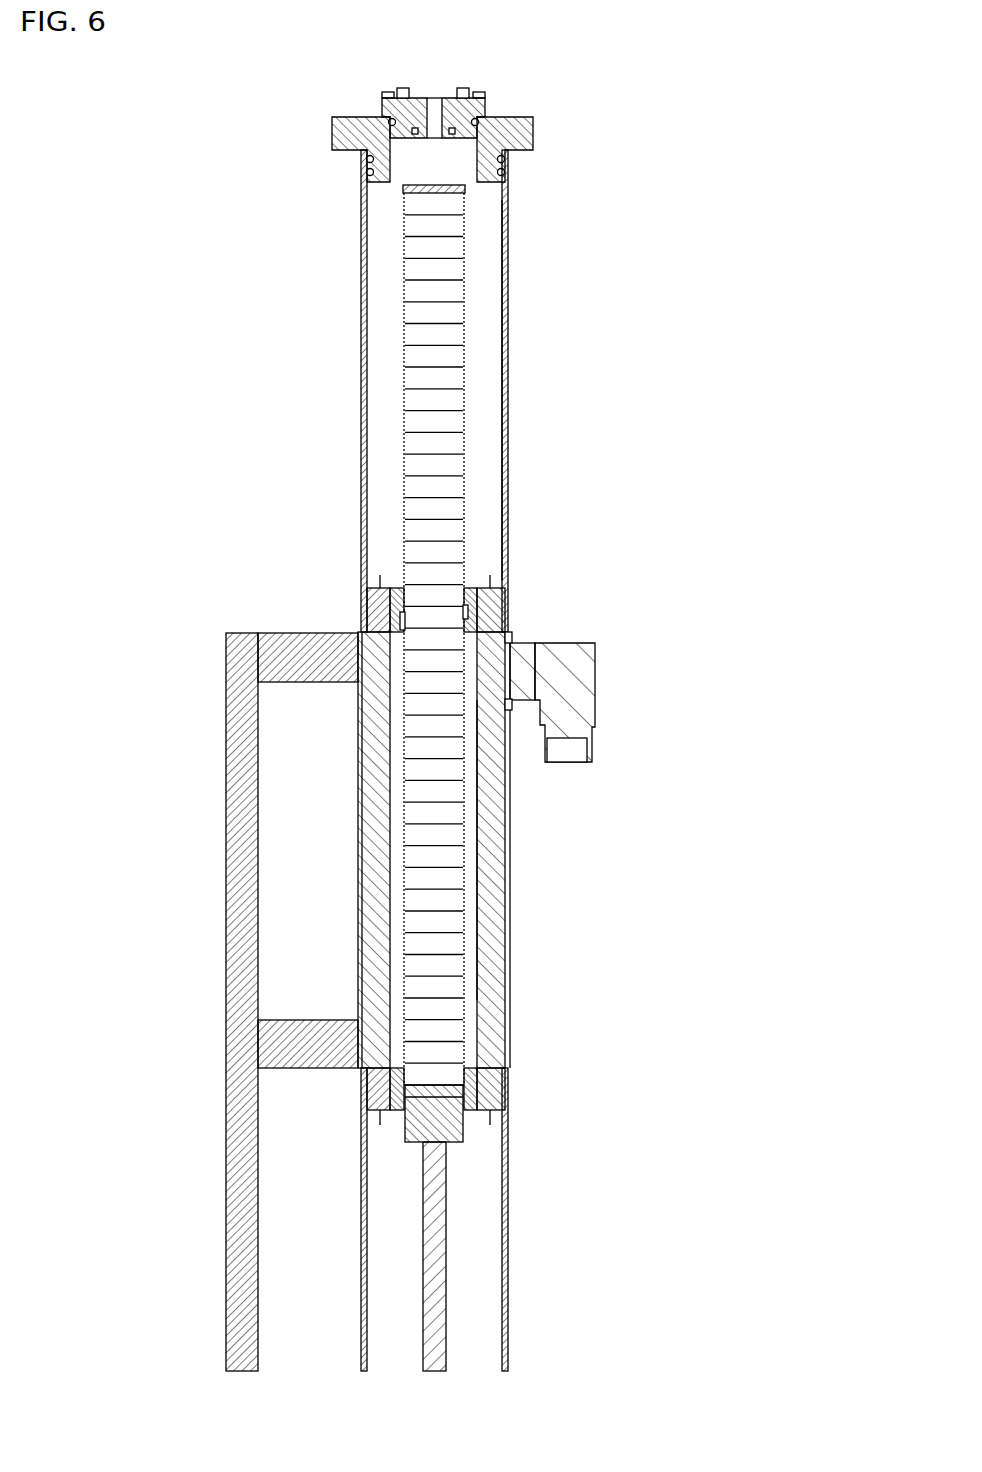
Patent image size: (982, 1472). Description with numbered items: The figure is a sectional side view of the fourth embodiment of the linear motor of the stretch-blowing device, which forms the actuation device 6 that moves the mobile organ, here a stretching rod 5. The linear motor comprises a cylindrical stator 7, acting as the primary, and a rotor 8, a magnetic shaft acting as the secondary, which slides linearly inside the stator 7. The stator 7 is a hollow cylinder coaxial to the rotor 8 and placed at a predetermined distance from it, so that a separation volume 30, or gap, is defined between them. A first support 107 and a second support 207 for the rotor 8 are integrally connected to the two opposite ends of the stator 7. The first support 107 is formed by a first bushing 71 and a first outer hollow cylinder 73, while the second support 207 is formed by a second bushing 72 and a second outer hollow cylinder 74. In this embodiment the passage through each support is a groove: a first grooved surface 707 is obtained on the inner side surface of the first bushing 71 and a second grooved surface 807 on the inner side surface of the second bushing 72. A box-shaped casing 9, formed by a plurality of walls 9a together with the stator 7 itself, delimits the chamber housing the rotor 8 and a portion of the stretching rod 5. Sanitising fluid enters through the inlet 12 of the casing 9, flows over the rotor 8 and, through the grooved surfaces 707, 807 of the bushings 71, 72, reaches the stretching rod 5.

The inlet 12 is at (433, 74).
The box-shaped casing 9 is at (508, 460).
The walls 9a is at (506, 504).
The rotor 8 is at (415, 513).
The first grooved surface 707 is at (403, 585).
The first outer hollow cylinder 73 is at (367, 600).
The first bushing 71 is at (478, 588).
The first support 107 is at (508, 610).
The actuation device 6 is at (606, 608).
The cylindrical stator 7 is at (497, 850).
The separation volume 30 is at (472, 908).
The second outer hollow cylinder 74 is at (371, 1076).
The second support 207 is at (506, 1097).
The second bushing 72 is at (478, 1110).
The stretching rod 5 is at (425, 1175).
The second grooved surface 807 is at (400, 1110).